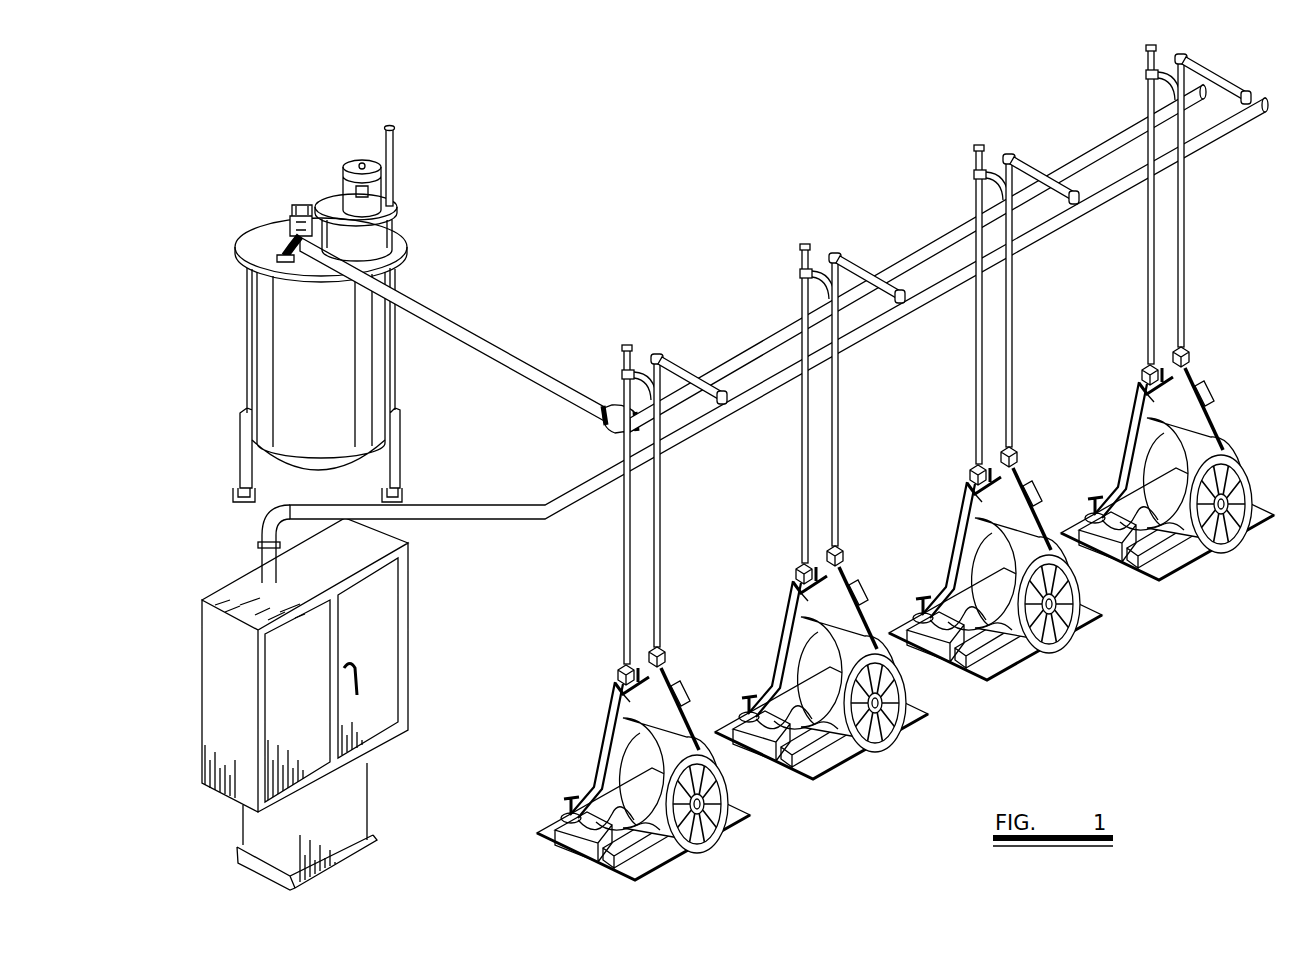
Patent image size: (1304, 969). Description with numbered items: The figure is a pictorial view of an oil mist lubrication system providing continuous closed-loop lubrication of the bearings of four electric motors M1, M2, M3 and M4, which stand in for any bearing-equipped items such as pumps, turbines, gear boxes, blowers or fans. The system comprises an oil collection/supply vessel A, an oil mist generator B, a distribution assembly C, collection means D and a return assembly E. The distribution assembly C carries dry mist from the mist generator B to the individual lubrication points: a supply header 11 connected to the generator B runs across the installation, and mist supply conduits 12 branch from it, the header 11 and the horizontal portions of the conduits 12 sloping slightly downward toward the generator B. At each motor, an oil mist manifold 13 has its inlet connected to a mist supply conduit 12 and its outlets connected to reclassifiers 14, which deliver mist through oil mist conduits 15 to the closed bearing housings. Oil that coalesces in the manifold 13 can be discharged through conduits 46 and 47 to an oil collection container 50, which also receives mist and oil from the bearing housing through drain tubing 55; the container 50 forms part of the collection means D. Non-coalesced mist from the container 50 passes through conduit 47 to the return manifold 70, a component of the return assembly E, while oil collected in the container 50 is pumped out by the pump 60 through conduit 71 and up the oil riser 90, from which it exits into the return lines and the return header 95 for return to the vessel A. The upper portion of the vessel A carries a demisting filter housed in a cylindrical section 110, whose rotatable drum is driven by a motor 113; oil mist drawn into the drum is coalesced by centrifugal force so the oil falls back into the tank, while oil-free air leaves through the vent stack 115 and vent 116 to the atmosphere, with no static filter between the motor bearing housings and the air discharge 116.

The oil collection/supply vessel A is at (365, 385).
The oil mist generator B is at (388, 633).
The distribution assembly C is at (952, 297).
The collection means D is at (582, 840).
The return assembly E is at (955, 230).
The supply header 11 is at (1047, 236).
The mist supply conduit 12 is at (661, 542).
The oil mist manifold 13 is at (665, 652).
The reclassifier 14 is at (684, 680).
The oil mist conduit 15 is at (693, 722).
The conduit 46 is at (645, 687).
The conduit 47 is at (618, 762).
The oil collection container 50 is at (592, 858).
The bearing housing drain tubing 55 is at (638, 852).
The pump 60 is at (566, 822).
The return manifold 70 is at (617, 667).
The conduit 71 is at (598, 755).
The oil riser 90 is at (623, 566).
The return header 95 is at (935, 250).
The cylindrical section 110 is at (408, 237).
The motor 113 is at (350, 198).
The vent stack 115 is at (394, 173).
The vent 116 is at (392, 125).
The electric motor M1 is at (703, 830).
The electric motor M2 is at (880, 730).
The electric motor M3 is at (1055, 630).
The electric motor M4 is at (1228, 532).